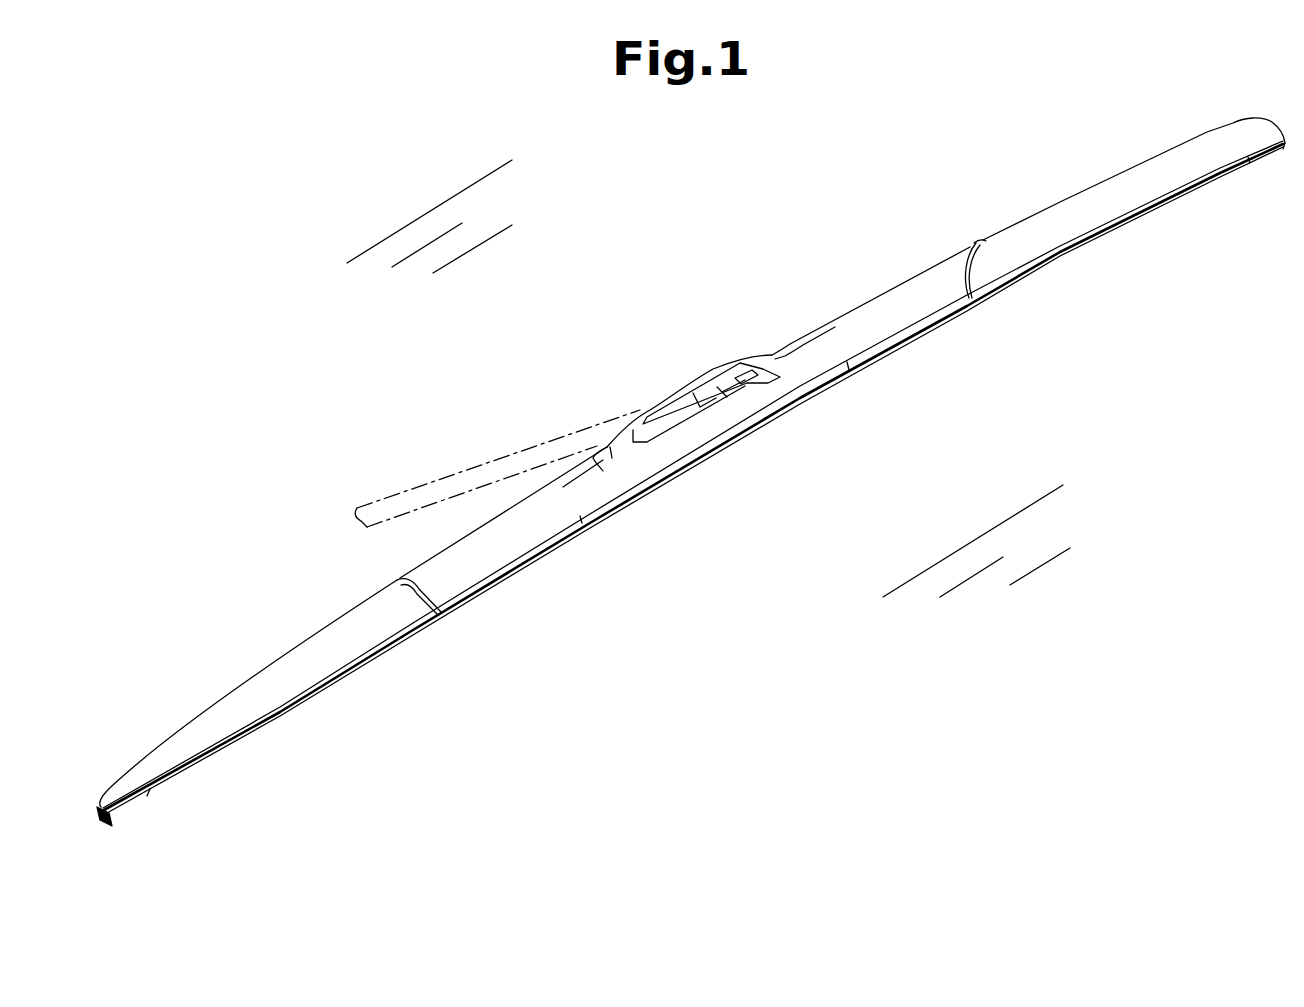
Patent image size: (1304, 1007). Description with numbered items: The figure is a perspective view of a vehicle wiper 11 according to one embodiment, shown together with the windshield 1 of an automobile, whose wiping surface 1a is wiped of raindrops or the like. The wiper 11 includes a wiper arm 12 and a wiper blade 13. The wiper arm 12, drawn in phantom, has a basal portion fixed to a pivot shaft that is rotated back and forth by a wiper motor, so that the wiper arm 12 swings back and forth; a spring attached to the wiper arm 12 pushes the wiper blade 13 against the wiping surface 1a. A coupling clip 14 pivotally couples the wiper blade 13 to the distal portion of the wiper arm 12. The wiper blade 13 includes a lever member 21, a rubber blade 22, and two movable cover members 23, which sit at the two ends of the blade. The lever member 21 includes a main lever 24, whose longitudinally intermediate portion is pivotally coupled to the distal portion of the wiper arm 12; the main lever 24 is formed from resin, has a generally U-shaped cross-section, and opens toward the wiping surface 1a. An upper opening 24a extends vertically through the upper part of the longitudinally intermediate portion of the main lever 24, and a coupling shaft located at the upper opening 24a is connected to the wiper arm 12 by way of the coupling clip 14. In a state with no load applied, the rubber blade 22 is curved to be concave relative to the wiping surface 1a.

The windshield 1 is at (443, 190).
The wiping surface 1a is at (1023, 527).
The vehicle wiper 11 is at (691, 504).
The wiper arm 12 is at (487, 460).
The wiper blade 13 is at (766, 355).
The coupling clip 14 is at (716, 385).
The lever member 21 is at (796, 327).
The rubber blade 22 is at (110, 828).
The movable cover member 23 is at (405, 609).
The main lever 24 is at (927, 307).
The upper opening 24a is at (727, 387).